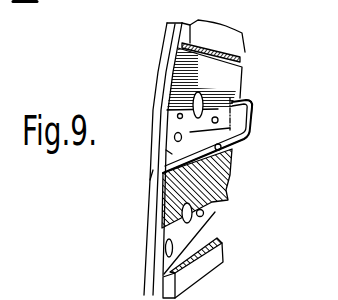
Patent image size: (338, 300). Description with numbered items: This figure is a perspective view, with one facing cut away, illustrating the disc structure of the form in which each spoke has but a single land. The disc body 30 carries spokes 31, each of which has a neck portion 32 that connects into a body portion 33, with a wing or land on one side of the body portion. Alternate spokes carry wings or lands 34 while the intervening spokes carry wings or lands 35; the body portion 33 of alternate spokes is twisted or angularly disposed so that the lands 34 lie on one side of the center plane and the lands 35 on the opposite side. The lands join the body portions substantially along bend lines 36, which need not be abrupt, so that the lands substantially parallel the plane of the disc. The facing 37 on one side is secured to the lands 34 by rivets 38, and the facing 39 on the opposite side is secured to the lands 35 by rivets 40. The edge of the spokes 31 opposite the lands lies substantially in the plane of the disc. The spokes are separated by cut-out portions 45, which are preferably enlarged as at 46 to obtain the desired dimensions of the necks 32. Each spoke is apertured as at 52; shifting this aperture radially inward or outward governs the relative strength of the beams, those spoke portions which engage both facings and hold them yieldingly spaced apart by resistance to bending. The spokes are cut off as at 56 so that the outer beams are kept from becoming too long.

The disc body 30 is at (225, 126).
The spoke 31 is at (168, 71).
The neck portion 32 is at (244, 80).
The body portion 33 is at (210, 68).
The wing or land 34 is at (166, 243).
The wing or land 35 is at (175, 135).
The bend line 36 is at (178, 116).
The facing 37 is at (152, 175).
The rivet 38 is at (163, 275).
The facing 39 is at (203, 35).
The rivet 40 is at (219, 121).
The cut-out portion 45 is at (230, 150).
The enlarged portion of cut-out 46 is at (252, 103).
The aperture 52 is at (204, 97).
The cut-off 56 is at (172, 154).